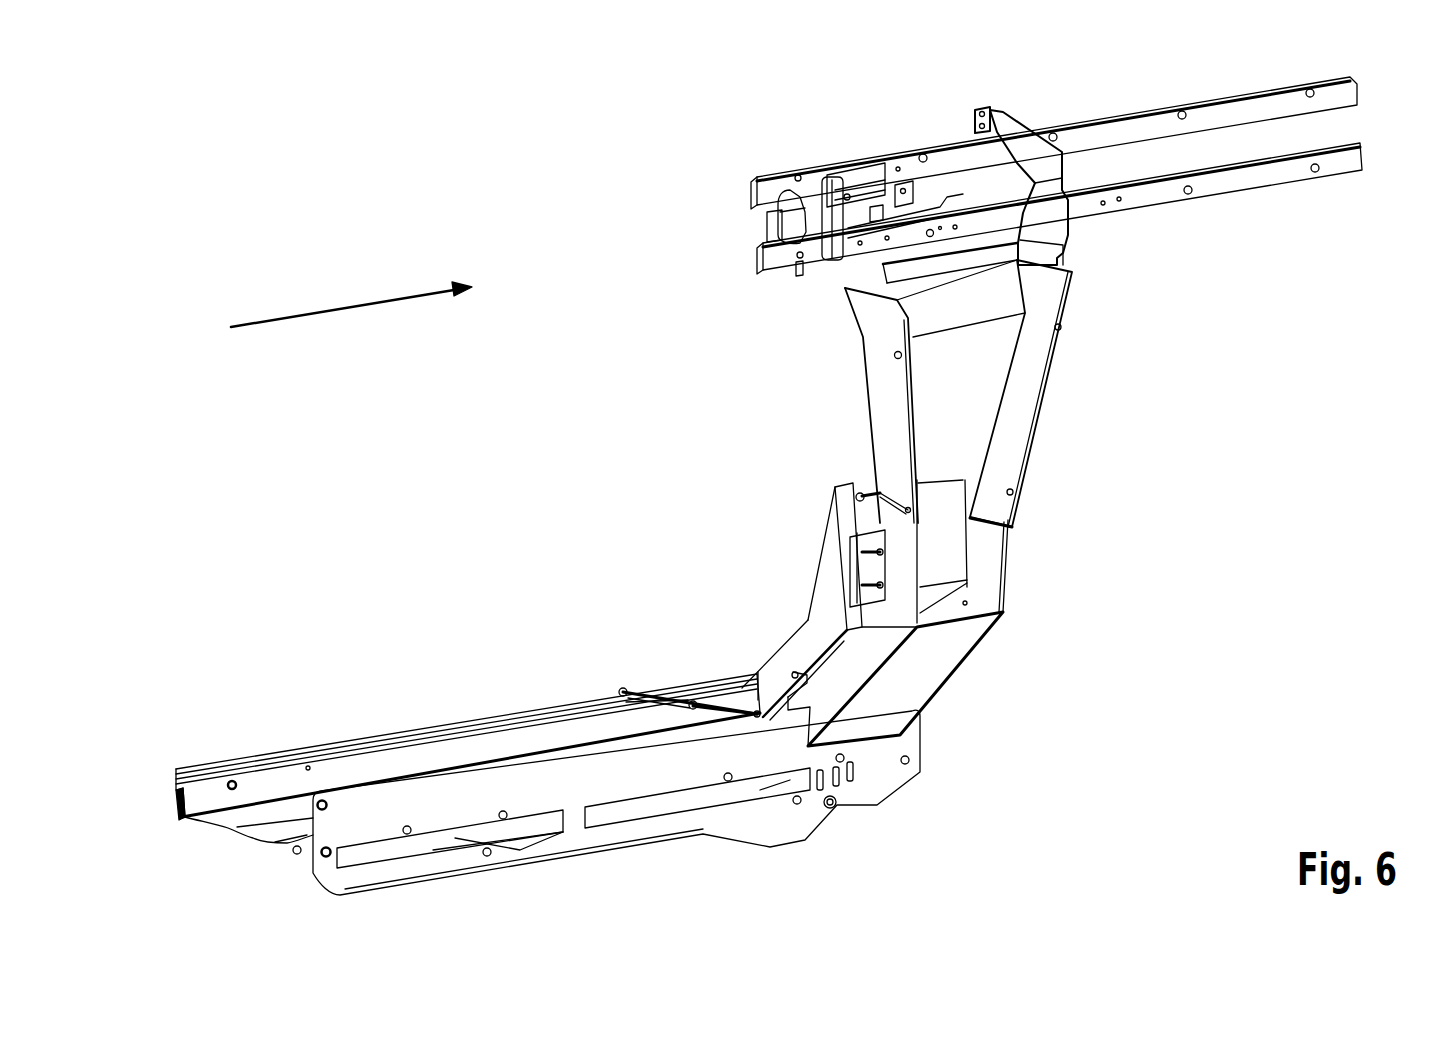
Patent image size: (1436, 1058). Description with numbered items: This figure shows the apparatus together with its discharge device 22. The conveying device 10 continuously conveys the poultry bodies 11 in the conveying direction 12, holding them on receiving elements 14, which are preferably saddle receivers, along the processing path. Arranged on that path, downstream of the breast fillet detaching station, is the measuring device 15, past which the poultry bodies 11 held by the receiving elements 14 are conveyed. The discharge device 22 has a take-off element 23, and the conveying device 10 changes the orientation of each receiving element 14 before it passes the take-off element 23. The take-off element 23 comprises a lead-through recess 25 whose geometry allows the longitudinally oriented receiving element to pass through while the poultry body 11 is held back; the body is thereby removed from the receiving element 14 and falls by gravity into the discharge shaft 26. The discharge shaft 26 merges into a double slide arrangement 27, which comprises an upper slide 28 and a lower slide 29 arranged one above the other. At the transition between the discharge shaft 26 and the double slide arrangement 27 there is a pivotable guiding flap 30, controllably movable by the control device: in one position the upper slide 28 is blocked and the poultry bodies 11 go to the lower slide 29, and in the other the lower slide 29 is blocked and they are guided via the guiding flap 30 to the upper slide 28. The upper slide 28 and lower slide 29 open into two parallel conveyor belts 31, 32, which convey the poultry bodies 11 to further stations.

The conveying device 10 is at (1285, 193).
The poultry bodies 11 is at (833, 218).
The conveying direction 12 is at (350, 302).
The receiving elements 14 is at (813, 225).
The measuring device 15 is at (864, 163).
The discharge device 22 is at (1012, 385).
The take-off element 23 is at (995, 110).
The lead-through recess 25 is at (1020, 180).
The discharge shaft 26 is at (990, 387).
The double slide arrangement 27 is at (968, 712).
The upper slide 28 is at (800, 652).
The lower slide 29 is at (843, 657).
The guiding flap 30 is at (955, 555).
The conveyor belt 31 is at (303, 860).
The conveyor belt 32 is at (287, 832).